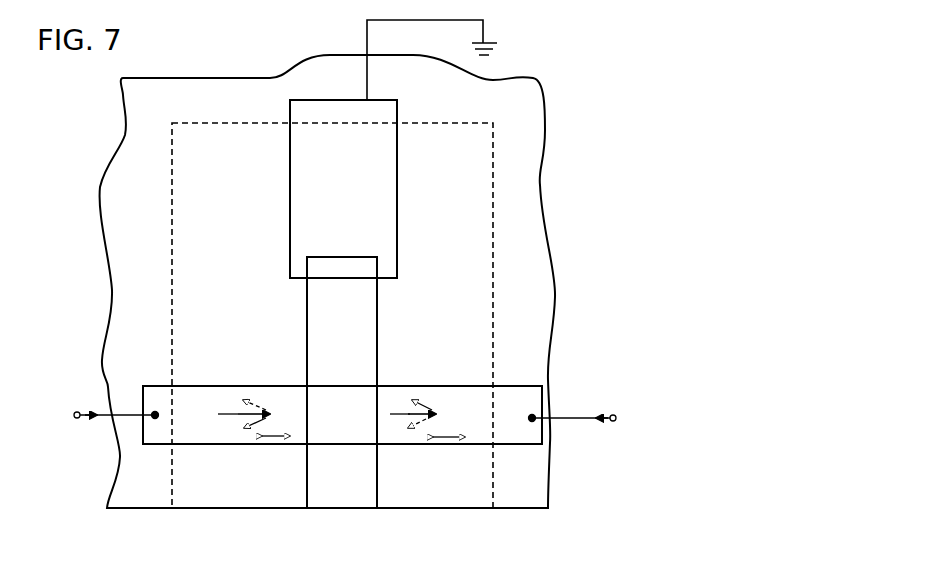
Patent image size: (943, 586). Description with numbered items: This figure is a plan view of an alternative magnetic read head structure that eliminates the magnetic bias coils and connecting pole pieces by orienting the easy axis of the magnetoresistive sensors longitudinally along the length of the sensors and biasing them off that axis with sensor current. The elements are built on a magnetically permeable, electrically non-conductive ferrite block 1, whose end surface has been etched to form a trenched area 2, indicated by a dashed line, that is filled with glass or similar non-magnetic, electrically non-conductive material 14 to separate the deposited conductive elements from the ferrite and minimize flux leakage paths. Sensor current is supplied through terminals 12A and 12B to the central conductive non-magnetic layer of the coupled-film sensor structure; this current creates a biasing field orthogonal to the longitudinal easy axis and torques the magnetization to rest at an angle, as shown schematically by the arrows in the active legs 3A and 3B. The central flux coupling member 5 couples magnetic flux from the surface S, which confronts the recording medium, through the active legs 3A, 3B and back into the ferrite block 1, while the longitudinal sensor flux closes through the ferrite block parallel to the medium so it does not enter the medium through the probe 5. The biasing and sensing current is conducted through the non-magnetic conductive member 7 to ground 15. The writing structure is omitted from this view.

The ferrite block 1 is at (543, 260).
The trenched area 2 is at (493, 183).
The active leg 3A is at (263, 397).
The active leg 3B is at (463, 395).
The flux coupling member 5 is at (363, 465).
The conductive member 7 is at (307, 108).
The terminal 12A is at (99, 409).
The terminal 12B is at (615, 415).
The non-magnetic non-conductive material 14 is at (470, 172).
The ground 15 is at (488, 28).
The surface S is at (283, 510).